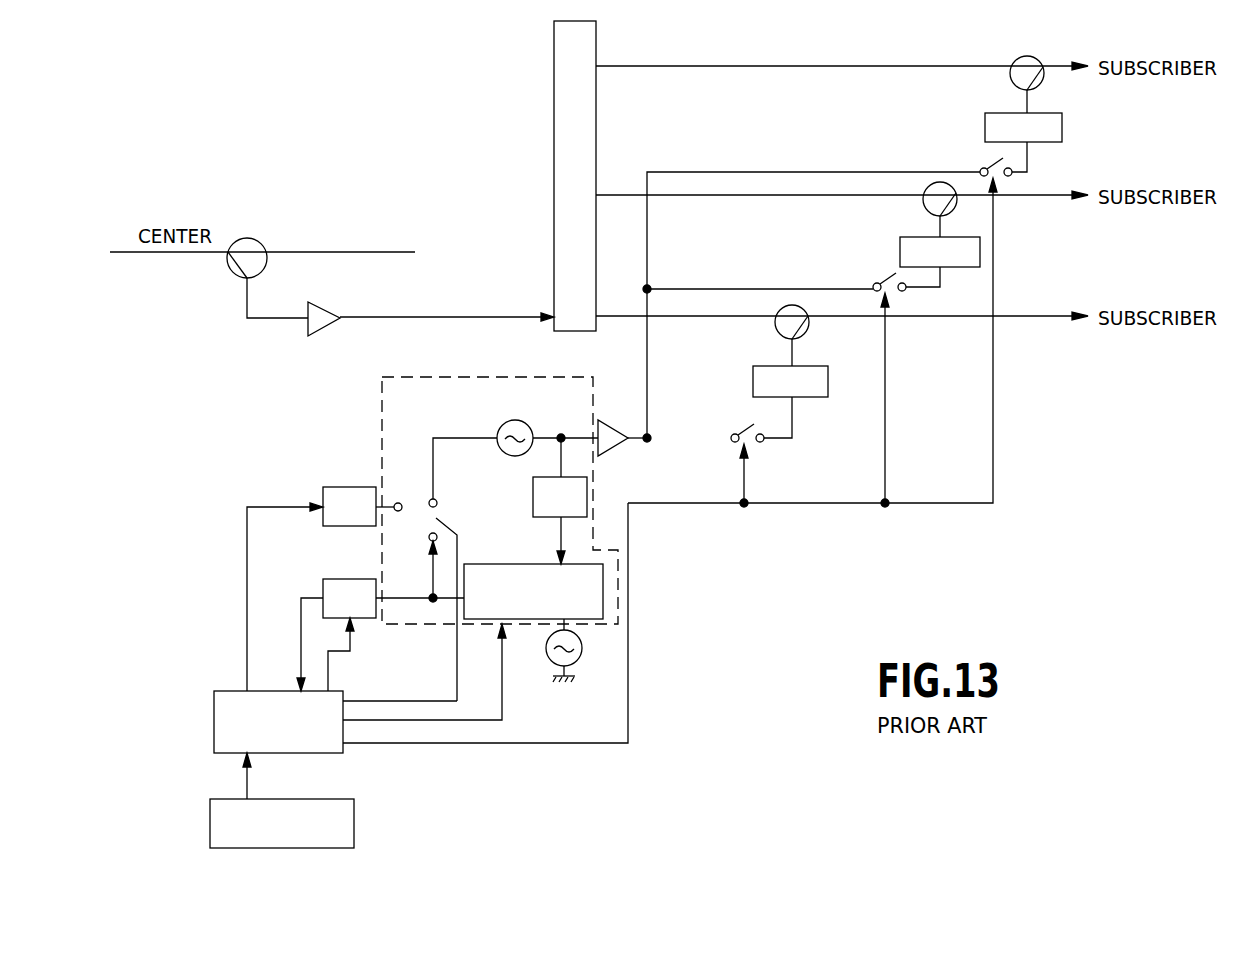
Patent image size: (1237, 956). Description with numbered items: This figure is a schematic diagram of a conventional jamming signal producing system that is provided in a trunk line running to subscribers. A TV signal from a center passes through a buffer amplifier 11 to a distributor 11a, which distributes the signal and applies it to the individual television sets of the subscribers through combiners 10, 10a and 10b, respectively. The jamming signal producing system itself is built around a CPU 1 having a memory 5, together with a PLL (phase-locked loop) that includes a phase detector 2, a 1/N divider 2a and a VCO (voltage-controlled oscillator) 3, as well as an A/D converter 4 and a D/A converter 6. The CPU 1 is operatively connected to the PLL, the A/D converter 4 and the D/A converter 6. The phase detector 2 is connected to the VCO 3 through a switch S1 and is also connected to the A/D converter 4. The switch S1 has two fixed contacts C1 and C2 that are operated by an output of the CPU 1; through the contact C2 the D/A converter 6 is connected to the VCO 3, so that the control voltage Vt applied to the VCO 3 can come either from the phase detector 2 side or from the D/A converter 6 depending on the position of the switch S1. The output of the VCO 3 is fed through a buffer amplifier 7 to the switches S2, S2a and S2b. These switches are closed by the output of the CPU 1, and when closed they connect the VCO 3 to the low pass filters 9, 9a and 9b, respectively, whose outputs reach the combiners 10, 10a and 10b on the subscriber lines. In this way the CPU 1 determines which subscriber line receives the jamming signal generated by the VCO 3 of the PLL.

The CPU 1 is at (282, 691).
The phase detector 2 is at (517, 563).
The 1/N divider 2a is at (532, 502).
The VCO 3 is at (526, 424).
The A/D converter 4 is at (351, 579).
The memory 5 is at (355, 814).
The D/A converter 6 is at (353, 487).
The buffer amplifier 7 is at (624, 428).
The low pass filter 9 is at (829, 378).
The low pass filter 9a is at (982, 244).
The low pass filter 9b is at (1030, 110).
The combiner 10 is at (796, 303).
The combiner 10a is at (932, 212).
The combiner 10b is at (1022, 52).
The buffer amplifier 11 is at (322, 312).
The distributor 11a is at (597, 97).
The switch S1 is at (450, 597).
The switch S2 is at (742, 421).
The switch S2a is at (873, 269).
The switch S2b is at (973, 158).
The phase-locked loop PLL is at (594, 486).
The fixed contact C1 is at (412, 551).
The fixed contact C2 is at (394, 492).
The tuning voltage Vt is at (445, 424).